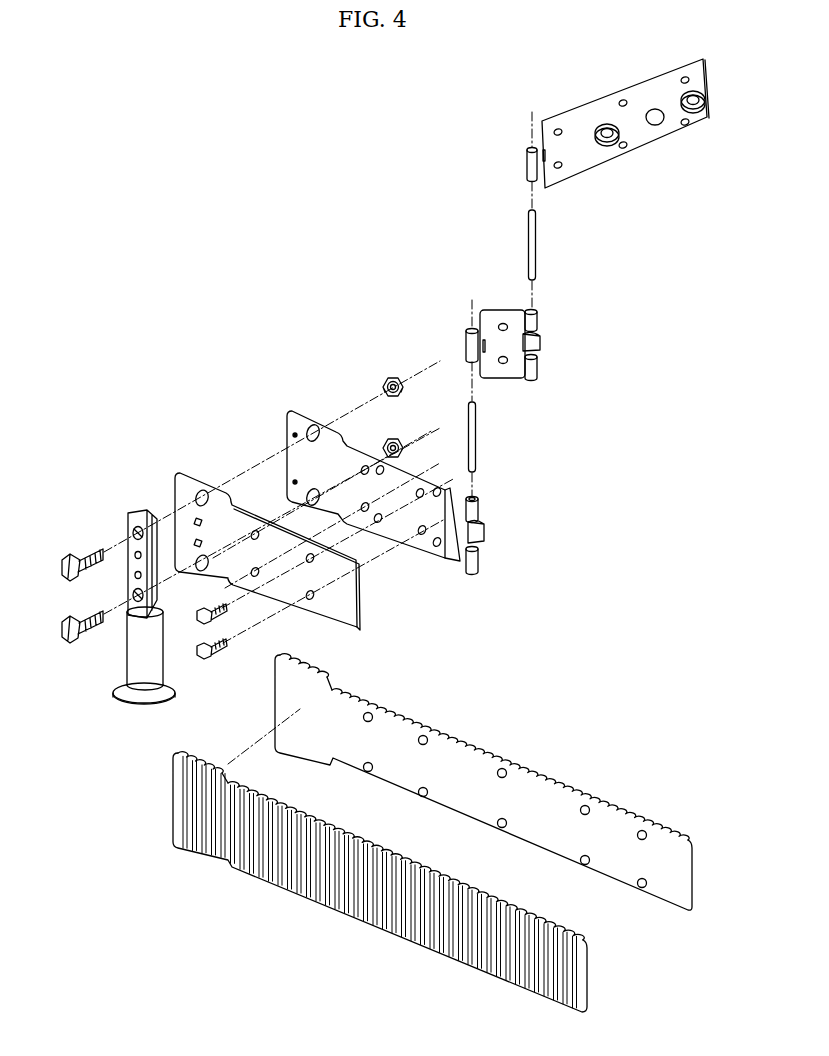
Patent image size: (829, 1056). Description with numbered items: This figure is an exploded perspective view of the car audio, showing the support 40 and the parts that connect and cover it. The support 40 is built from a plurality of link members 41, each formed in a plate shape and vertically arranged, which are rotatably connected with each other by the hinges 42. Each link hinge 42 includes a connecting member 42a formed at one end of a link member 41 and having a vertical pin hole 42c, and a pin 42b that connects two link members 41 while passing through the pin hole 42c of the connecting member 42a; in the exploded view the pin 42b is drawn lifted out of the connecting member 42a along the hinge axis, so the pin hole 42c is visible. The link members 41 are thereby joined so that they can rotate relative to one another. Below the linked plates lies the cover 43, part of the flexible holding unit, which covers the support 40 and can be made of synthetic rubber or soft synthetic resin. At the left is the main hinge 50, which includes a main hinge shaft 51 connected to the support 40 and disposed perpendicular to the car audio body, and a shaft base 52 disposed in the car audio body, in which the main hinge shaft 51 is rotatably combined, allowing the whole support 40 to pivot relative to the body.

The support 40 is at (294, 395).
The link member 41 is at (582, 164).
The hinge 42 is at (533, 488).
The connecting member 42a is at (470, 519).
The pin 42b is at (475, 447).
The pin hole 42c is at (478, 498).
The cover 43 is at (365, 902).
The main hinge 50 is at (93, 623).
The main hinge shaft 51 is at (127, 603).
The shaft base 52 is at (137, 667).